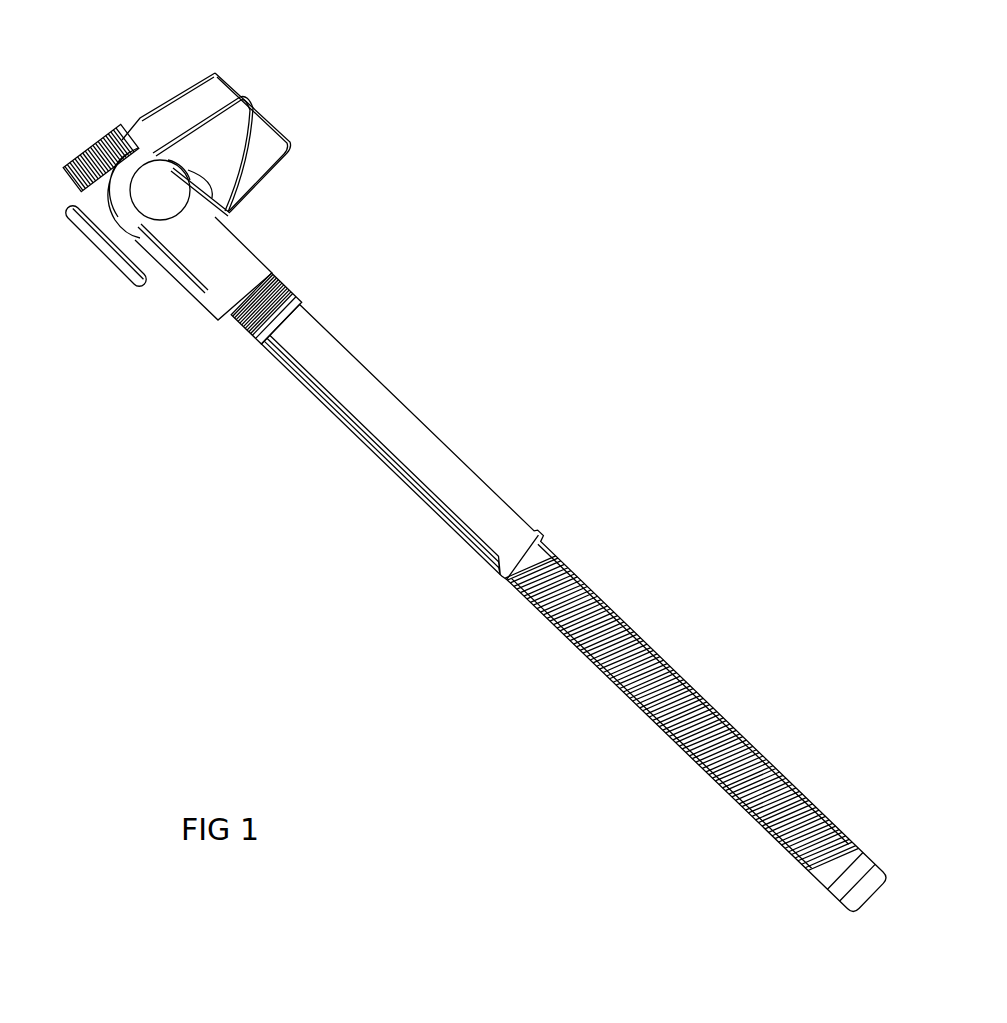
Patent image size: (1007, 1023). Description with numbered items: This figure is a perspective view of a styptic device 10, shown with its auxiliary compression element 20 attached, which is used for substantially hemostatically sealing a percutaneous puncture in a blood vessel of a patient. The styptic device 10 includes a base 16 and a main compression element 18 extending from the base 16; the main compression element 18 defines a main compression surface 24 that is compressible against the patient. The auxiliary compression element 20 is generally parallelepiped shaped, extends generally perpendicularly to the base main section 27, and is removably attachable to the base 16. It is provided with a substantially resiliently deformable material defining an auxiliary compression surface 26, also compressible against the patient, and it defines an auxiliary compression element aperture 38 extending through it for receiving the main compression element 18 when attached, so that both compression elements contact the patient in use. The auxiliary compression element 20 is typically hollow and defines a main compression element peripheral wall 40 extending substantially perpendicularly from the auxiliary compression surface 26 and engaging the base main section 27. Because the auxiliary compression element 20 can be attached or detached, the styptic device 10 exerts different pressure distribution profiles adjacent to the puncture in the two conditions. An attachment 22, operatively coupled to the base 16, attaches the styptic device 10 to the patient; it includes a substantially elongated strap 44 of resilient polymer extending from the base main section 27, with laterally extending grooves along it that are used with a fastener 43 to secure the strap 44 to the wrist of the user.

The styptic device 10 is at (569, 153).
The base 16 is at (197, 318).
The main compression element 18 is at (151, 182).
The auxiliary compression element 20 is at (291, 127).
The attachment 22 is at (508, 452).
The main compression surface 24 is at (168, 204).
The auxiliary compression surface 26 is at (233, 147).
The base main section 27 is at (229, 246).
The auxiliary compression element aperture 38 is at (173, 163).
The main compression element peripheral wall 40 is at (100, 258).
The fastener 43 is at (76, 145).
The strap 44 is at (372, 462).